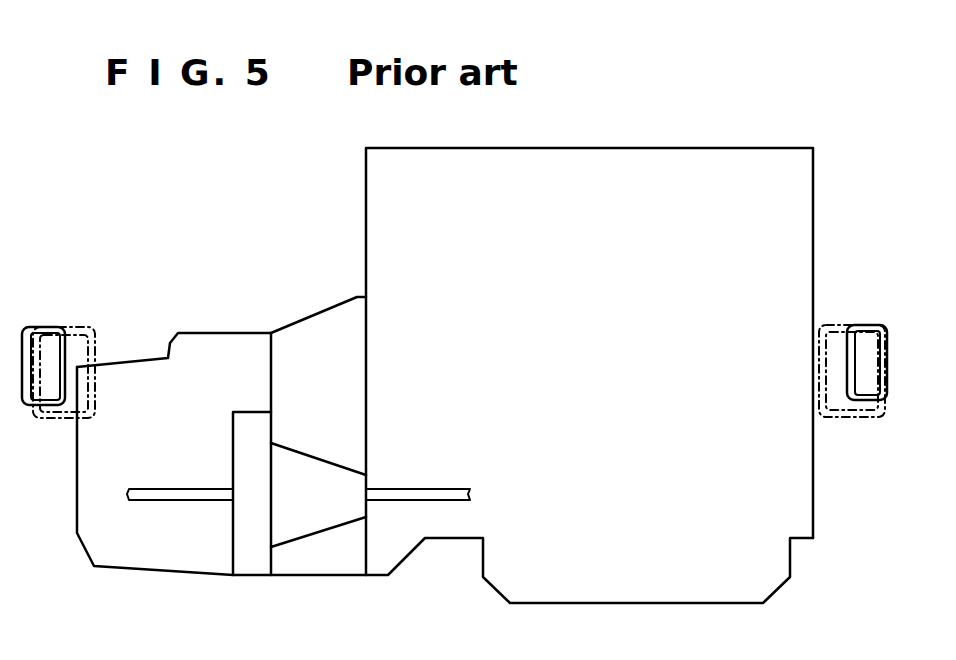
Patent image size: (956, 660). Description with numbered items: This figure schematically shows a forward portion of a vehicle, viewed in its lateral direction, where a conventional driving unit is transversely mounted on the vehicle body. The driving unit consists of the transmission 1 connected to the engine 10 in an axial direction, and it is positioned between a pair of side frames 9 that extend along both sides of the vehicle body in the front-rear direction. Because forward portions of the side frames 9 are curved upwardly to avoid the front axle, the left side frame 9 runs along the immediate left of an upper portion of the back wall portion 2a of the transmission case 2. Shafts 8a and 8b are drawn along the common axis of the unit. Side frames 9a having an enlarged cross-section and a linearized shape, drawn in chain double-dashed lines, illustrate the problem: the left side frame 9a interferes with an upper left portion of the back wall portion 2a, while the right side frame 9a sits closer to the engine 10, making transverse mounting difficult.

The transmission 1 is at (136, 302).
The transmission case 2 is at (198, 352).
The back wall portion 2a is at (77, 513).
The pump shaft 8a is at (173, 491).
The motor shaft 8b is at (424, 494).
The side frames 9 is at (40, 328).
The side frames having enlarged cross-section 9a is at (55, 420).
The engine 10 is at (606, 148).